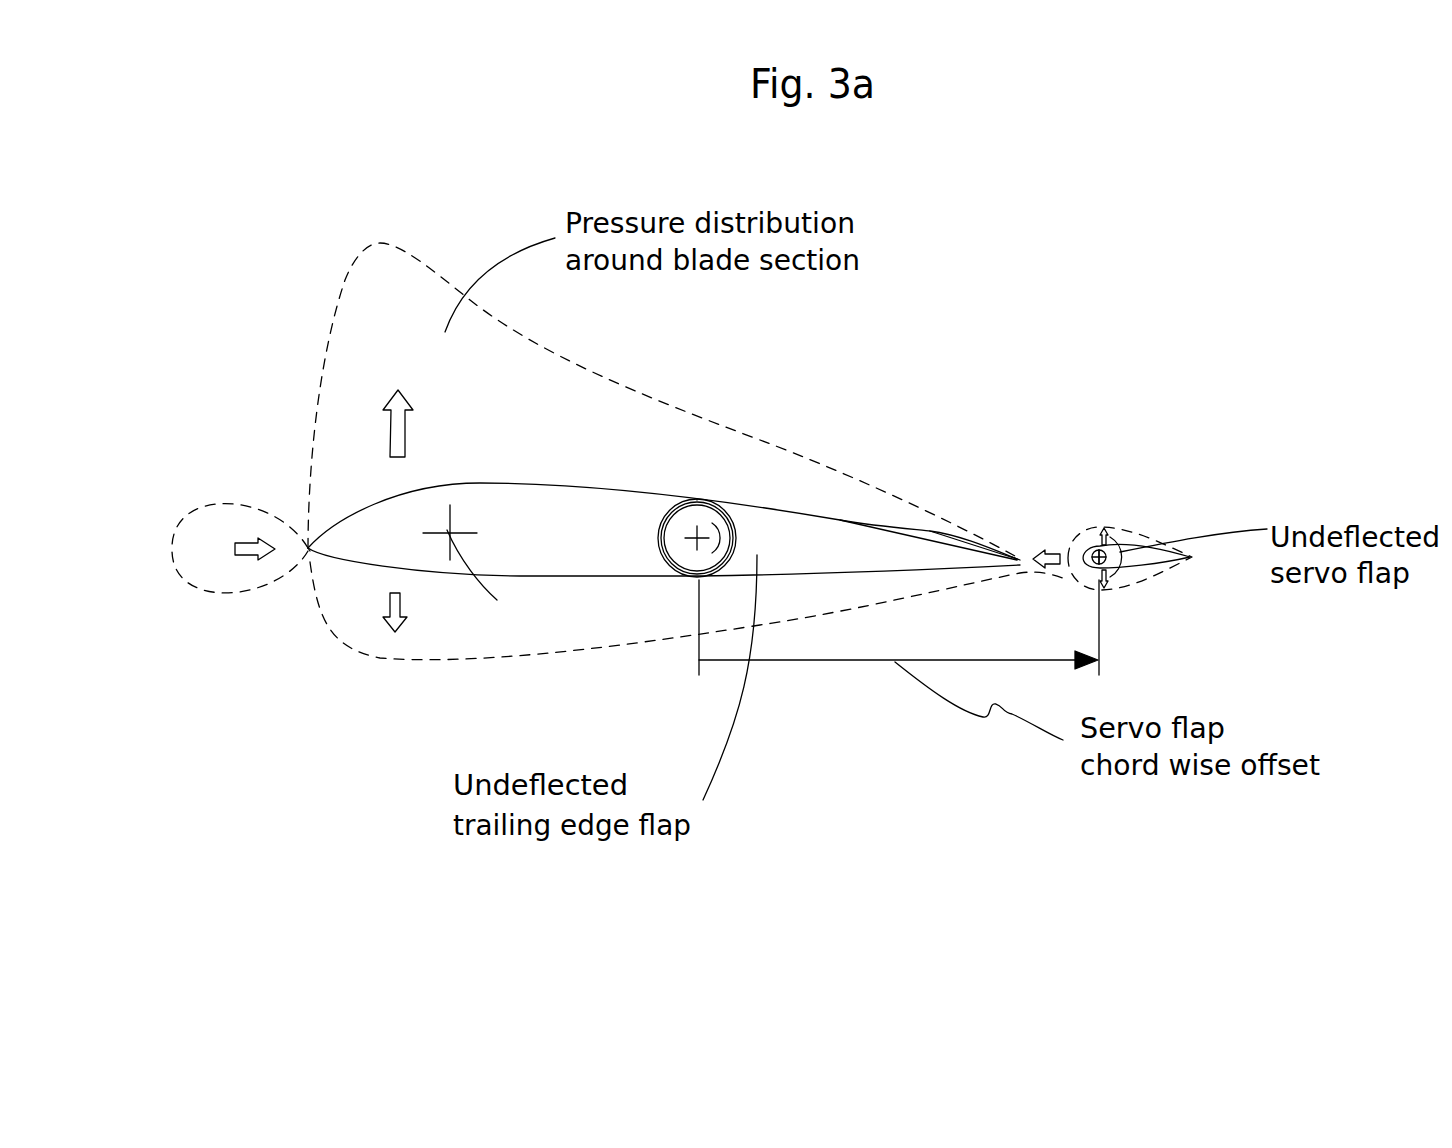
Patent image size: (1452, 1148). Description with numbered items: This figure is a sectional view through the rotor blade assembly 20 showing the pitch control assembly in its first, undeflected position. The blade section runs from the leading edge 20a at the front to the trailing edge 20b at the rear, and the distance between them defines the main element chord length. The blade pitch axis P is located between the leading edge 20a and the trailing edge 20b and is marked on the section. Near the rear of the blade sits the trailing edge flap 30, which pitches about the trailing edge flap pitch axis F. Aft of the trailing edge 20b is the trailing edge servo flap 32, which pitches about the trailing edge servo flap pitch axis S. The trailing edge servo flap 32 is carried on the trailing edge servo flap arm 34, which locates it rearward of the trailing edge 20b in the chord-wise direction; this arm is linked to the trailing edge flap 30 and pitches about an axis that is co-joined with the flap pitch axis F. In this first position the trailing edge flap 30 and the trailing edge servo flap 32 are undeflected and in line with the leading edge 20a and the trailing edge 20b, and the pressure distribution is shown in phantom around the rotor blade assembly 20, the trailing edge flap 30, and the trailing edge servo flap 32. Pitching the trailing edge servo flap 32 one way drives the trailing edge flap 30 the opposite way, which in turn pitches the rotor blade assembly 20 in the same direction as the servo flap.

The rotor blade assembly 20 is at (664, 529).
The leading edge 20a is at (308, 550).
The trailing edge 20b is at (1015, 558).
The trailing edge flap 30 is at (790, 530).
The trailing edge servo flap 32 is at (1137, 562).
The trailing edge servo flap arm 34 is at (960, 535).
The blade pitch axis P is at (482, 577).
The trailing edge servo flap pitch axis S is at (1107, 553).
The trailing edge flap pitch axis F is at (712, 518).